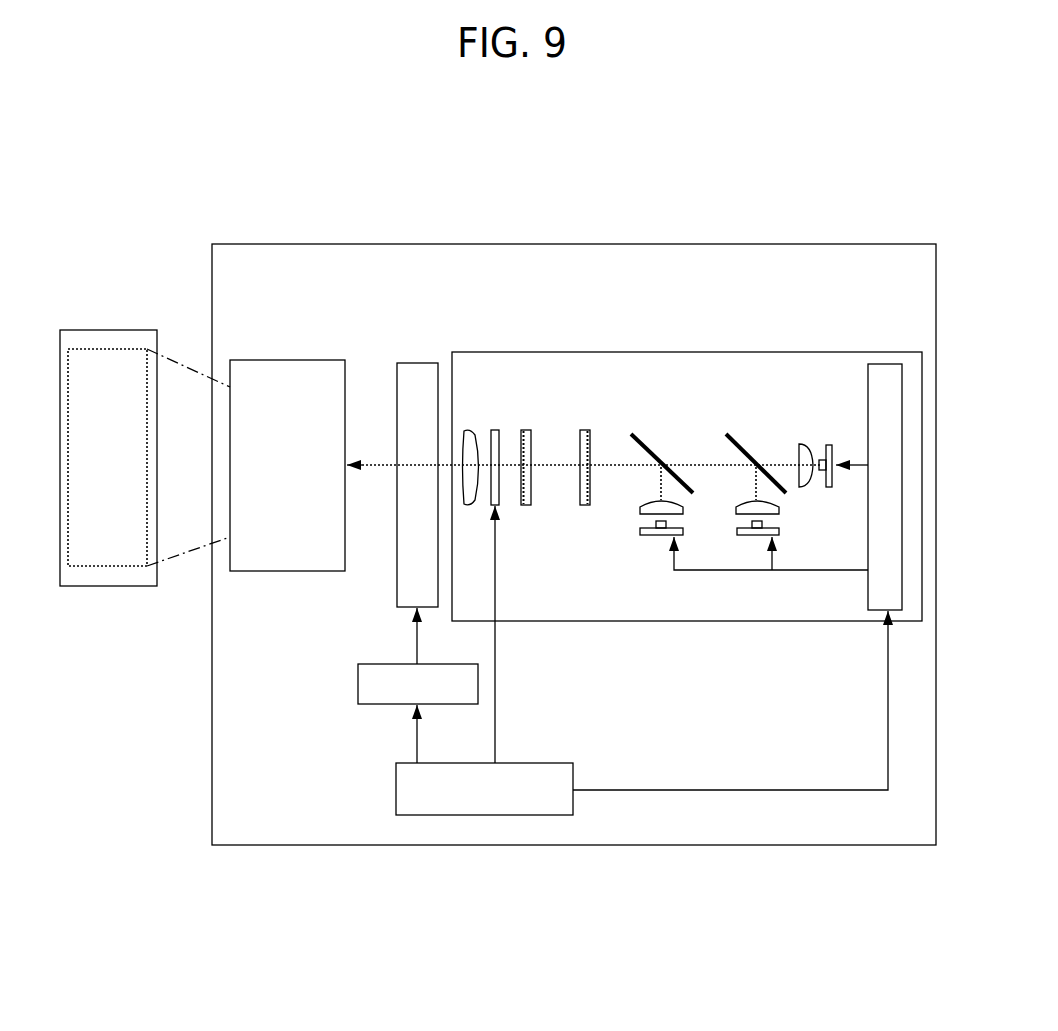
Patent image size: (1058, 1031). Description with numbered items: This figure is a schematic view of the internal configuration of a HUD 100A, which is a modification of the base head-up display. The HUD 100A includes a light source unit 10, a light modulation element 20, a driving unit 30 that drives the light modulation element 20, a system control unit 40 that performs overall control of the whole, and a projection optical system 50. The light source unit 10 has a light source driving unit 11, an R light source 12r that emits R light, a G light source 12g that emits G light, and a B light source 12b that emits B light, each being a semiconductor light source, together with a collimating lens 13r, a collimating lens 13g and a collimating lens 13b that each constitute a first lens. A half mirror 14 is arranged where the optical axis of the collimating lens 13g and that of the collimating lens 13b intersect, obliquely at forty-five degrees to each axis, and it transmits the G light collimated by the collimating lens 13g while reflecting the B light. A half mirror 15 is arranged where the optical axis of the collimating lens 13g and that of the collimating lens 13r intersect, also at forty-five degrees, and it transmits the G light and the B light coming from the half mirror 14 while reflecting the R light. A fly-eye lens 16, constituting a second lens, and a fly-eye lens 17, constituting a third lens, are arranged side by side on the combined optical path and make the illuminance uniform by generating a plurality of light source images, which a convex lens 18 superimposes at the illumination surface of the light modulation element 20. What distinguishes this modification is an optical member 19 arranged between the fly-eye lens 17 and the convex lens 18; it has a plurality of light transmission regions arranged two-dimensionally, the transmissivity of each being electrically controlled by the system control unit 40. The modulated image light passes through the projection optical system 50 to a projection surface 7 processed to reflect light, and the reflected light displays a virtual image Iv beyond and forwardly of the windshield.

The HUD 100A is at (780, 231).
The light source unit 10 is at (765, 351).
The light source driving unit 11 is at (876, 364).
The G light source 12g is at (826, 445).
The R light source 12r is at (667, 525).
The B light source 12b is at (779, 532).
The collimating lens 13g is at (800, 444).
The collimating lens 13r is at (639, 508).
The collimating lens 13b is at (779, 508).
The half mirror 14 is at (728, 433).
The half mirror 15 is at (634, 433).
The fly-eye lens 16 is at (584, 430).
The fly-eye lens 17 is at (526, 430).
The convex lens 18 is at (466, 430).
The optical member 19 is at (495, 430).
The light modulation element 20 is at (412, 363).
The driving unit 30 is at (362, 664).
The system control unit 40 is at (573, 767).
The projection optical system 50 is at (260, 572).
The projection surface 7 is at (146, 330).
The virtual image Iv is at (80, 349).